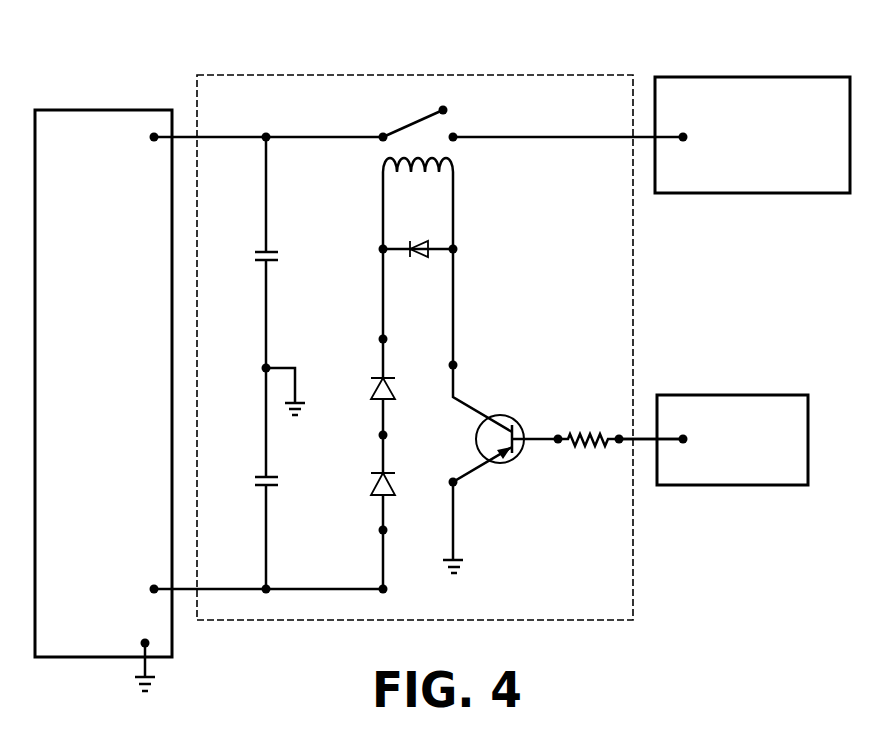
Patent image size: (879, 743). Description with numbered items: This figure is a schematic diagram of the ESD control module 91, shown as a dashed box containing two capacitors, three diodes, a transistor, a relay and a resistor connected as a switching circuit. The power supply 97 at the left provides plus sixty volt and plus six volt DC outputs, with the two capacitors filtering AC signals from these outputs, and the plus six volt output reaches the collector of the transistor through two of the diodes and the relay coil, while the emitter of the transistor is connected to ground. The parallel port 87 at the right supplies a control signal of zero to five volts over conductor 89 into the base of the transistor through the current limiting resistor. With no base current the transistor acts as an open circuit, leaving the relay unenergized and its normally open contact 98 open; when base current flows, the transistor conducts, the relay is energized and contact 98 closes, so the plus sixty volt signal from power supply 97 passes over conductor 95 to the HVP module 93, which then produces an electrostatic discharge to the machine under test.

The power supply 97 is at (92, 110).
The ESD control module 91 is at (426, 323).
The HVP module 93 is at (750, 70).
The conductor 95 is at (533, 137).
The normally open contact 98 is at (413, 122).
The parallel port 87 is at (735, 395).
The conductor 89 is at (645, 440).